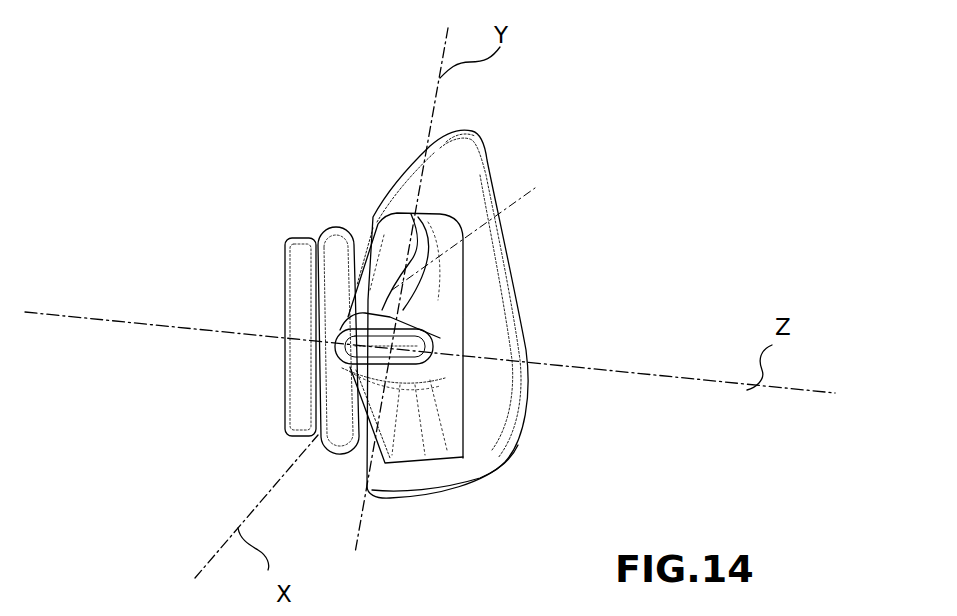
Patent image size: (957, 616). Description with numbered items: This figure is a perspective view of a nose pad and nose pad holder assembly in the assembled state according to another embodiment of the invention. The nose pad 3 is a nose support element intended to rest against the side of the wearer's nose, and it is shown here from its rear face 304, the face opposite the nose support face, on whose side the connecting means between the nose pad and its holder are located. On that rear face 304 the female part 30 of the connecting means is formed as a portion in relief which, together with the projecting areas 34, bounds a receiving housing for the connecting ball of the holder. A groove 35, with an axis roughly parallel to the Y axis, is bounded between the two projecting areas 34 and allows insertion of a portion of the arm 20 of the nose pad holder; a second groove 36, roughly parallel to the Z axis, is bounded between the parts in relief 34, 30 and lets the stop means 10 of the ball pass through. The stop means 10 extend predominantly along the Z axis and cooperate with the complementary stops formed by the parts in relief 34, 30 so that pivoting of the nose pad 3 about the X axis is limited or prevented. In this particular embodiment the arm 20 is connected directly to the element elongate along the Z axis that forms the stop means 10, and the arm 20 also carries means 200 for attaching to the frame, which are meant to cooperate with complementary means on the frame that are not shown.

The nose pad 3 is at (497, 187).
The rear face 304 is at (483, 148).
The projecting areas 34 is at (378, 217).
The groove 35 is at (411, 214).
The groove 36 is at (440, 338).
The stop means 10 is at (428, 348).
The female part 30 is at (420, 405).
The arm 20 is at (337, 257).
The means for attaching to the frame 200 is at (287, 358).